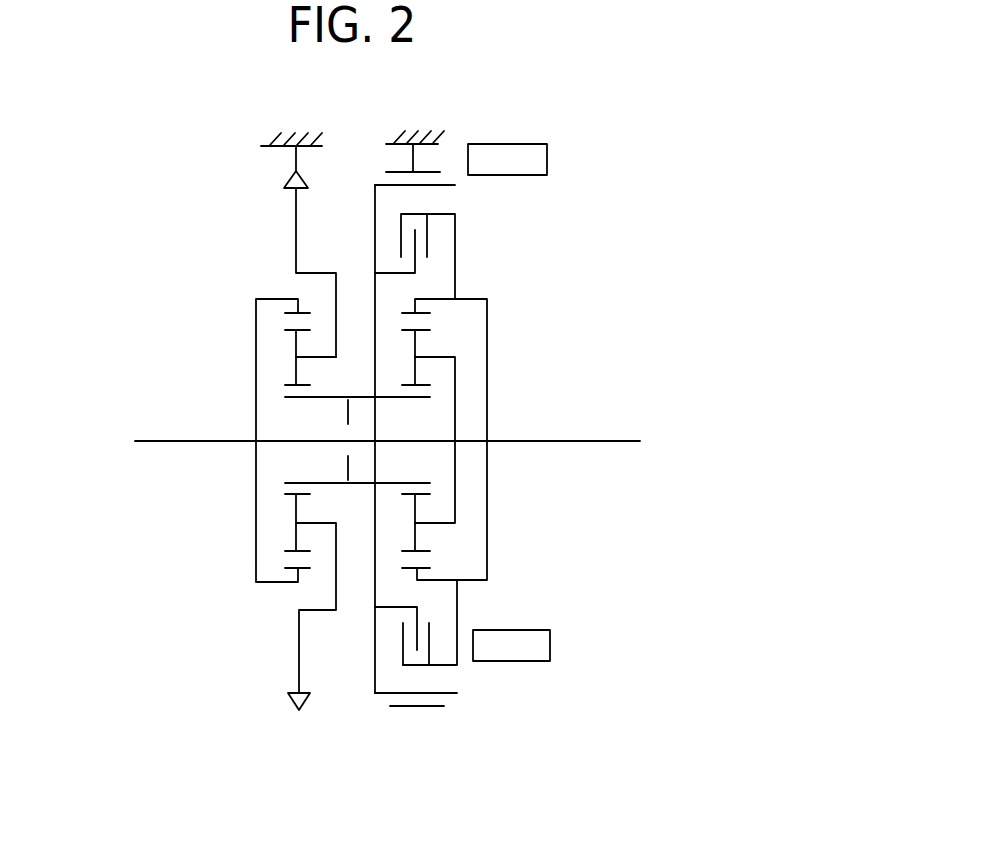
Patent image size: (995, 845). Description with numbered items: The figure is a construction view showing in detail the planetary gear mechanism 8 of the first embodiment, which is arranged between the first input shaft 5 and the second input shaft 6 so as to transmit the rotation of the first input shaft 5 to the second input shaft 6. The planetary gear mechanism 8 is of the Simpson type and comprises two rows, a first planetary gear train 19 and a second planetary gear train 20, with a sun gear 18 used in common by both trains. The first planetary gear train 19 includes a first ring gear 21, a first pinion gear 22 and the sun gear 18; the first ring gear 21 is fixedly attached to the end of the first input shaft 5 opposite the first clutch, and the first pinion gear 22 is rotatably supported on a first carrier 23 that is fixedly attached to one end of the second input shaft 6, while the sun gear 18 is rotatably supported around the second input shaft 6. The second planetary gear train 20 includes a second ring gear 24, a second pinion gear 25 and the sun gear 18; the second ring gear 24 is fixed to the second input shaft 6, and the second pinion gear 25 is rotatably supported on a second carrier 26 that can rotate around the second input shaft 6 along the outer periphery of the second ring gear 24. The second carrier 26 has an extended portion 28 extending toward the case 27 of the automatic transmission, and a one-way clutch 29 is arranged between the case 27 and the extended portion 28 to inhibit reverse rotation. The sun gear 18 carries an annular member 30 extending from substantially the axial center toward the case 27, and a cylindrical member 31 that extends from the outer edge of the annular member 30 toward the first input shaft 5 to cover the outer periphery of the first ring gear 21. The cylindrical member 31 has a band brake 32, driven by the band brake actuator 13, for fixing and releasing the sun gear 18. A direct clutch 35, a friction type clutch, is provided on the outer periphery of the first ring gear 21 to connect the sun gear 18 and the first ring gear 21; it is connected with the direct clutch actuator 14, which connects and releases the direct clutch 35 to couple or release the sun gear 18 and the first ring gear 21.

The first input shaft 5 is at (555, 440).
The second input shaft 6 is at (155, 444).
The planetary gear mechanism 8 is at (105, 208).
The band brake actuator 13 is at (547, 158).
The direct clutch actuator 14 is at (550, 645).
The sun gear 18 is at (305, 398).
The first planetary gear train 19 is at (506, 250).
The second planetary gear train 20 is at (190, 140).
The first ring gear 21 is at (487, 322).
The first pinion gear 22 is at (417, 540).
The first carrier 23 is at (455, 487).
The second ring gear 24 is at (255, 323).
The second pinion gear 25 is at (296, 540).
The second carrier 26 is at (340, 590).
The case 27 is at (265, 143).
The extended portion 28 is at (296, 224).
The one-way clutch 29 is at (292, 178).
The annular member 30 is at (375, 665).
The cylindrical member 31 is at (437, 692).
The band brake 32 is at (378, 166).
The direct clutch 35 is at (429, 635).